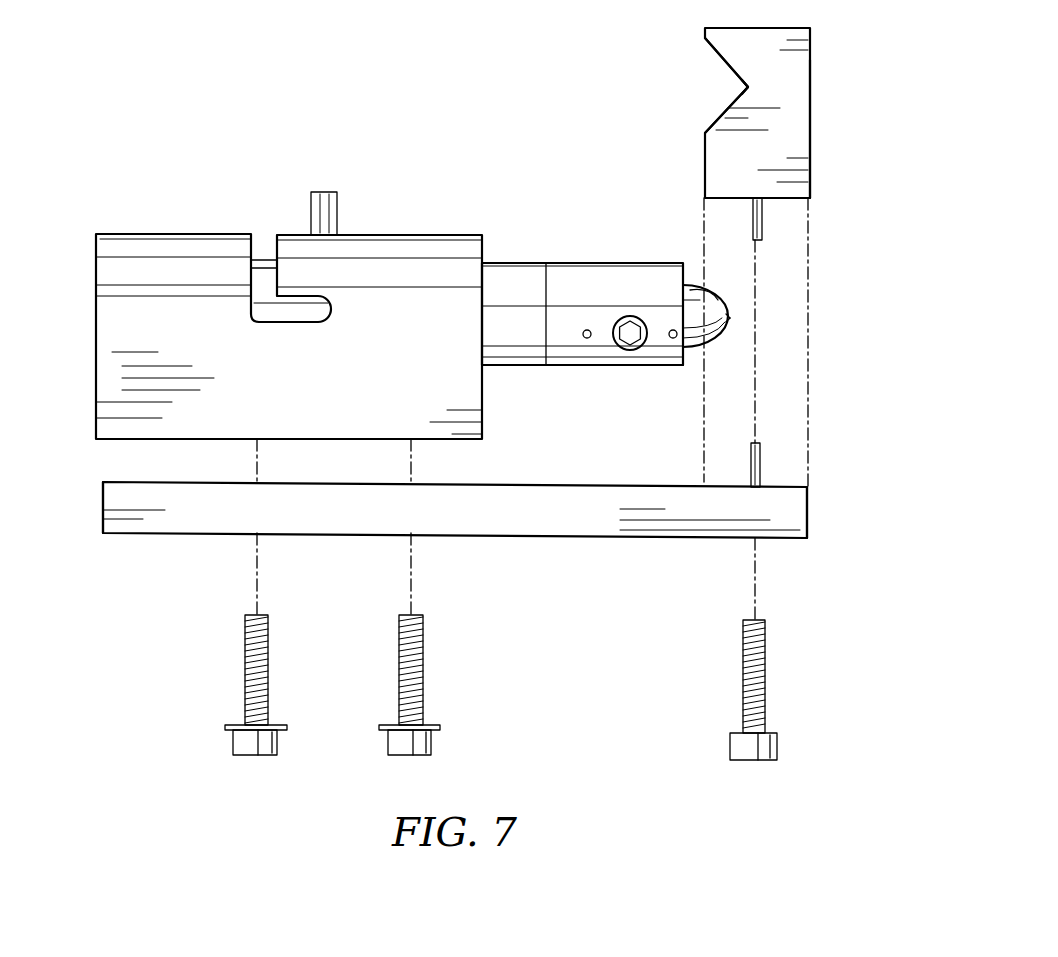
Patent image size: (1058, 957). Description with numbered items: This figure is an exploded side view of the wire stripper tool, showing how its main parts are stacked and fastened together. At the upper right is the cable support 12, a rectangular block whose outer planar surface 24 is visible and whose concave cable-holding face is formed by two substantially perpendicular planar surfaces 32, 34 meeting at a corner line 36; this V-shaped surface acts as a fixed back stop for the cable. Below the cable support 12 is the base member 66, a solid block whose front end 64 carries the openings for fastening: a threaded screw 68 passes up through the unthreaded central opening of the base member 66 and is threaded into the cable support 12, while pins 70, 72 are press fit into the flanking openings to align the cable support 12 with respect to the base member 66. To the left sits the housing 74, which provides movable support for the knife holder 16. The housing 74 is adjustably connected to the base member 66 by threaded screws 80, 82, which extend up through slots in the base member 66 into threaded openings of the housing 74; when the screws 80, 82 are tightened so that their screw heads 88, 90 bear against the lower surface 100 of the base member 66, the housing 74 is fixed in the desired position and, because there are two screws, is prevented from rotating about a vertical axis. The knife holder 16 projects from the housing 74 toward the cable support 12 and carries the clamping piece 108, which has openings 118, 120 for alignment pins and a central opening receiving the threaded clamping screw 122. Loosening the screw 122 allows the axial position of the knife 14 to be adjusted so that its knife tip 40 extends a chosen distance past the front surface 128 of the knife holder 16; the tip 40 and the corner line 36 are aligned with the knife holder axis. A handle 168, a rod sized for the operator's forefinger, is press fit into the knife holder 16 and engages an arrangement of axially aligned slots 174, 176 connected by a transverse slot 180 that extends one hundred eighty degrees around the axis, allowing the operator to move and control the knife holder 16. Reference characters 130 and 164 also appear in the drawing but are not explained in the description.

The cable support 12 is at (796, 62).
The planar surface 24 is at (810, 143).
The planar surface 32 is at (718, 54).
The planar surface 34 is at (718, 122).
The corner line 36 is at (747, 87).
The pin 70 is at (763, 218).
The pin 72 is at (762, 455).
The housing 74 is at (108, 372).
The axially aligned slot 176 is at (290, 234).
The handle 168 is at (337, 212).
The transverse slot 180 is at (253, 288).
The slot 164 is at (268, 312).
The axially aligned slot 174 is at (313, 314).
The clamping piece 108 is at (562, 282).
The knife holder 16 is at (515, 353).
The opening 120 is at (589, 330).
The threaded screw 122 is at (627, 337).
The opening 118 is at (673, 338).
The knife 14 is at (728, 316).
The tip shoulder 130 is at (706, 300).
The knife tip 40 is at (728, 318).
The front surface 128 is at (728, 320).
The base member 66 is at (480, 533).
The front end 64 is at (800, 502).
The lower surface 100 is at (175, 533).
The threaded screw 80 is at (268, 645).
The threaded screw 82 is at (418, 648).
The threaded screw 68 is at (757, 658).
The screw head 88 is at (278, 740).
The screw head 90 is at (432, 740).